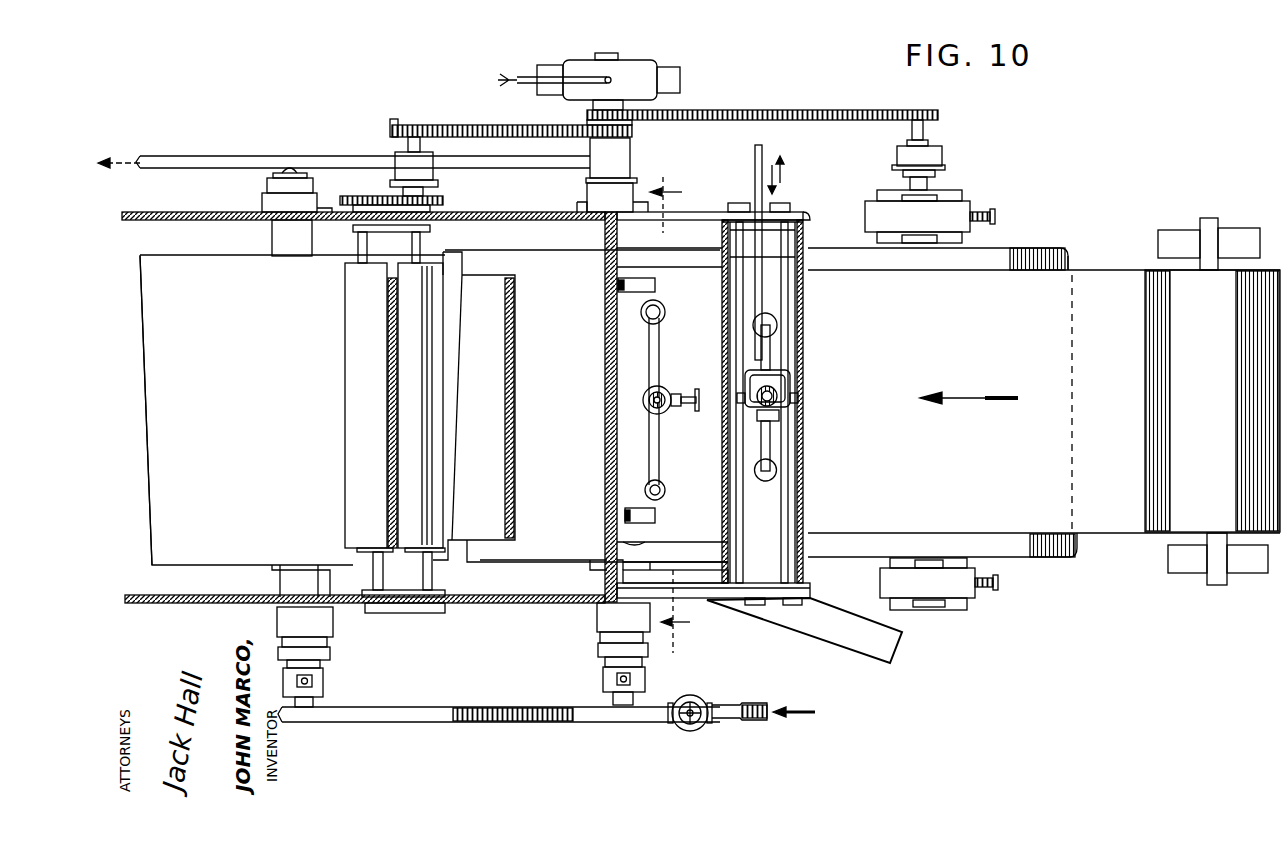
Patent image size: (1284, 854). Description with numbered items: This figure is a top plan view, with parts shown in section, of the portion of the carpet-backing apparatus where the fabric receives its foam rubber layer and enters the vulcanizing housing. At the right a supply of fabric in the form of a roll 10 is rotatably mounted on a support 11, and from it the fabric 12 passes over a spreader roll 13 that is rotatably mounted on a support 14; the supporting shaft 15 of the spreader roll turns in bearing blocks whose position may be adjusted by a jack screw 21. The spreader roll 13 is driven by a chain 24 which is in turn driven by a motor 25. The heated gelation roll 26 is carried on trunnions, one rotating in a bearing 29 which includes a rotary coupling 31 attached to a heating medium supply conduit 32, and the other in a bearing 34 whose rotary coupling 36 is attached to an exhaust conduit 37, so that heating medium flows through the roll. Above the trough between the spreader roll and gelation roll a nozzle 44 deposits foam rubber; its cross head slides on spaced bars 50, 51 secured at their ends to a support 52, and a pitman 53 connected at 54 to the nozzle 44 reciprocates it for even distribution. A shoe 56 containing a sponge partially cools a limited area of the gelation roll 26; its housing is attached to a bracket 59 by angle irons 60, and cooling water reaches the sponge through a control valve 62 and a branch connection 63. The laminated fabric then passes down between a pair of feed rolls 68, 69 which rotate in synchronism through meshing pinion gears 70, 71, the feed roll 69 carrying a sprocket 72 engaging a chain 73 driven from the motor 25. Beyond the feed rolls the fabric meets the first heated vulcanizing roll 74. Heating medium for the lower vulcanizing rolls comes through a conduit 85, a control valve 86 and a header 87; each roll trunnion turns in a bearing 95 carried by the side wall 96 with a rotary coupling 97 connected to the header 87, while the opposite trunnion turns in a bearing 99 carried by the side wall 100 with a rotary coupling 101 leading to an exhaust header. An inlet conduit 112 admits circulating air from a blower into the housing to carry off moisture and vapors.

The roll 10 is at (1253, 378).
The support 11 is at (1180, 233).
The fabric 12 is at (1100, 267).
The spreader roll 13 is at (1082, 552).
The support 14 is at (960, 207).
The supporting shaft 15 is at (676, 415).
The jack screw 21 is at (996, 215).
The chain 24 is at (793, 112).
The motor 25 is at (643, 73).
The gelation roll 26 is at (707, 552).
The bearing 29 is at (597, 622).
The rotary coupling 31 is at (598, 648).
The heating medium supply conduit 32 is at (624, 708).
The bearing 34 is at (590, 200).
The rotary coupling 36 is at (622, 167).
The exhaust conduit 37 is at (537, 168).
The nozzle 44 is at (782, 440).
The spaced bar 50 is at (740, 288).
The spaced bar 51 is at (787, 300).
The support 52 is at (804, 214).
The pitman 53 is at (765, 147).
The connection 54 is at (793, 392).
The shoe 56 is at (640, 543).
The bracket 59 is at (705, 262).
The angle irons 60 is at (655, 515).
The control valve 62 is at (672, 393).
The branch connection 63 is at (657, 358).
The feed roll 68 is at (352, 434).
The feed roll 69 is at (433, 433).
The pinion gear 70 is at (345, 197).
The pinion gear 71 is at (445, 198).
The sprocket 72 is at (395, 123).
The chain 73 is at (470, 124).
The vulcanizing roll 74 is at (187, 263).
The conduit 85 is at (758, 703).
The control valve 86 is at (698, 730).
The header 87 is at (433, 718).
The bearing 95 is at (322, 628).
The side wall 96 is at (180, 596).
The rotary coupling 97 is at (327, 652).
The bearing 99 is at (267, 204).
The side wall 100 is at (160, 213).
The rotary coupling 101 is at (268, 185).
The inlet conduit 112 is at (887, 655).